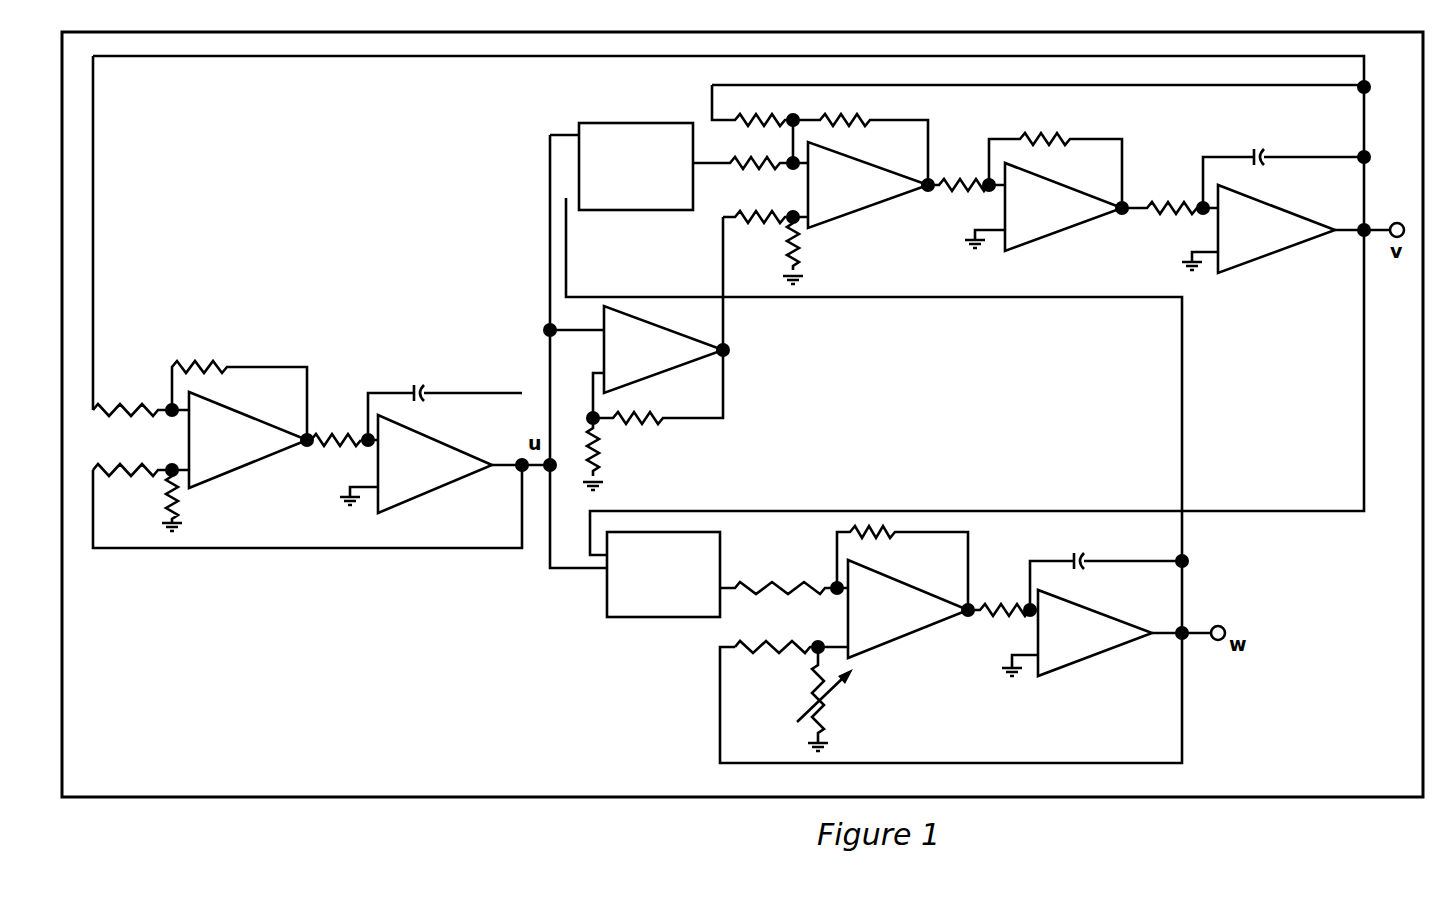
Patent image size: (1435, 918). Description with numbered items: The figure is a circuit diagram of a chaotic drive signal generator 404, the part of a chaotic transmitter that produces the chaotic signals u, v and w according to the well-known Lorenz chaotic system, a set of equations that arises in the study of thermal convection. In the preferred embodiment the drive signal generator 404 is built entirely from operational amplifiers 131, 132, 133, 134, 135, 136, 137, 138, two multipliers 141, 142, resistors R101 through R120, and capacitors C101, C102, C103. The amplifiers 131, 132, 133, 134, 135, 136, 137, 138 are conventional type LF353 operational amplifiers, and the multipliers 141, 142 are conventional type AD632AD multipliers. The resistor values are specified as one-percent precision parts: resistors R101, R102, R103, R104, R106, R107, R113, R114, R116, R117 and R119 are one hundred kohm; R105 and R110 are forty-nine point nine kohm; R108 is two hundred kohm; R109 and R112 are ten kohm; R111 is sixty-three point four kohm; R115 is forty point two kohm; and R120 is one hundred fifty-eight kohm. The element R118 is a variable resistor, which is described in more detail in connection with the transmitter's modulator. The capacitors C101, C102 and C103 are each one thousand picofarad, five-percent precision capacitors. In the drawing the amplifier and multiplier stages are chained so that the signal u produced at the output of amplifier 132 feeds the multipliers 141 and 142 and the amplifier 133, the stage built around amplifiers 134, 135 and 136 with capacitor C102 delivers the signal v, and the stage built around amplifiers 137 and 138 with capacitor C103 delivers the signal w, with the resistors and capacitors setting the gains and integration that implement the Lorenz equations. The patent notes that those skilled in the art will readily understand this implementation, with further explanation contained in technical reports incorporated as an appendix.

The chaotic drive signal generator 404 is at (1196, 806).
The resistor R101 is at (132, 420).
The resistor R102 is at (132, 459).
The resistor R103 is at (208, 502).
The resistor R104 is at (239, 385).
The resistor R105 is at (335, 454).
The resistor R106 is at (621, 454).
The resistor R107 is at (658, 387).
The resistor R108 is at (752, 124).
The resistor R109 is at (743, 151).
The resistor R110 is at (758, 204).
The resistor R111 is at (822, 250).
The resistor R112 is at (860, 149).
The resistor R113 is at (960, 201).
The resistor R114 is at (1055, 159).
The resistor R115 is at (1164, 223).
The resistor R116 is at (778, 574).
The resistor R117 is at (776, 659).
The variable resistor R118 is at (849, 699).
The resistor R119 is at (902, 568).
The resistor R120 is at (999, 624).
The capacitor C101 is at (445, 400).
The capacitor C102 is at (1283, 178).
The capacitor C103 is at (1106, 581).
The operational amplifier 131 is at (248, 440).
The operational amplifier 132 is at (416, 464).
The operational amplifier 133 is at (658, 362).
The operational amplifier 134 is at (868, 185).
The operational amplifier 135 is at (1043, 207).
The operational amplifier 136 is at (1258, 229).
The operational amplifier 137 is at (908, 609).
The operational amplifier 138 is at (1077, 633).
The multiplier 141 is at (636, 166).
The multiplier 142 is at (663, 574).